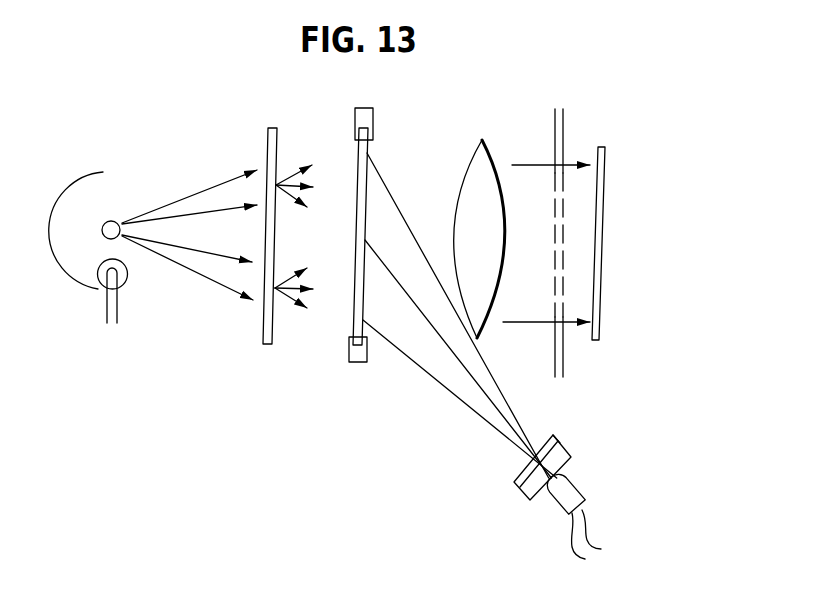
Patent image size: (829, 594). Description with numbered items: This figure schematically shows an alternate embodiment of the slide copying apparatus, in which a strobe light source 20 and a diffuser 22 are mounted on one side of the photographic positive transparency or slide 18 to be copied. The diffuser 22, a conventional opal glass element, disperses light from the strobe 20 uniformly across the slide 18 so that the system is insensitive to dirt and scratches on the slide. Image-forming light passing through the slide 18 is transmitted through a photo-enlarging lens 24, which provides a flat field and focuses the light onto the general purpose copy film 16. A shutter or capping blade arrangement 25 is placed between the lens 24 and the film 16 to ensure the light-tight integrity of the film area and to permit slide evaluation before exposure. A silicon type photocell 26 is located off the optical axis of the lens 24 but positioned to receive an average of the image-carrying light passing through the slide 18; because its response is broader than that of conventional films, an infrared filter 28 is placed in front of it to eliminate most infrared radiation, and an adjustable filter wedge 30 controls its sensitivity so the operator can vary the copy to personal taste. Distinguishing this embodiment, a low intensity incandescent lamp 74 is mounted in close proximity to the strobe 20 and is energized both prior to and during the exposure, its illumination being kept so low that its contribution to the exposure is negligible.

The general purpose film 16 is at (602, 205).
The photographic positive transparency or slide 18 is at (367, 148).
The strobe light source 20 is at (113, 221).
The diffuser 22 is at (275, 147).
The photo-enlarging lens 24 is at (487, 143).
The shutter or capping blade arrangement 25 is at (565, 133).
The silicon type photocell 26 is at (571, 488).
The infrared filter 28 is at (571, 458).
The adjustable filter wedge 30 is at (553, 437).
The low intensity incandescent lamp 74 is at (127, 282).